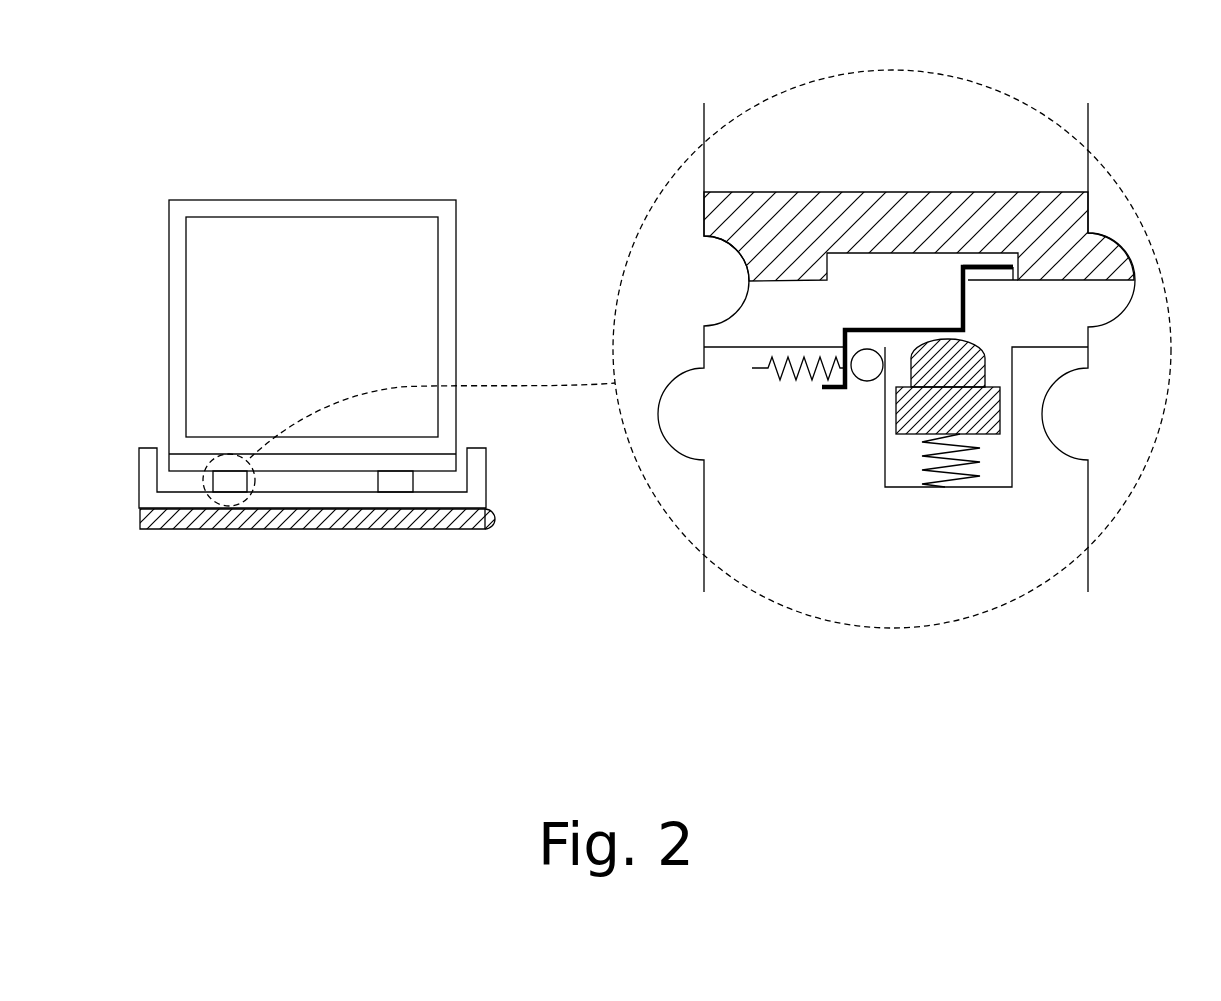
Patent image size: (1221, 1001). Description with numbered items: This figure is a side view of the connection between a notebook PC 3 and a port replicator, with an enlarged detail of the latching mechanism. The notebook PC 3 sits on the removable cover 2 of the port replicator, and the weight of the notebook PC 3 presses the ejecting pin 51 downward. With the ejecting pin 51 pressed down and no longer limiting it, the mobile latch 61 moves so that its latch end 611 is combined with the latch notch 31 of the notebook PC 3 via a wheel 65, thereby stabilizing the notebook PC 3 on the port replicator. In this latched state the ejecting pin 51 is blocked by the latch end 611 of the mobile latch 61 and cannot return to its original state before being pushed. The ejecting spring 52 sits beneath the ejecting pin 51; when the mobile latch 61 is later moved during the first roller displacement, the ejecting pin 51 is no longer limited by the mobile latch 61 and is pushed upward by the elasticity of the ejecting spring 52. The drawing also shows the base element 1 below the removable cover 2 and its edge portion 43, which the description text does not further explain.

The base plate 1 is at (305, 530).
The removable cover 2 is at (475, 480).
The notebook PC 3 is at (245, 205).
The rounded edge of base plate 43 is at (493, 522).
The latch notch 31 is at (1018, 281).
The mobile latch 61 is at (877, 328).
The latch end 611 is at (987, 267).
The wheel 65 is at (867, 383).
The ejecting pin 51 is at (967, 364).
The ejecting spring 52 is at (965, 470).